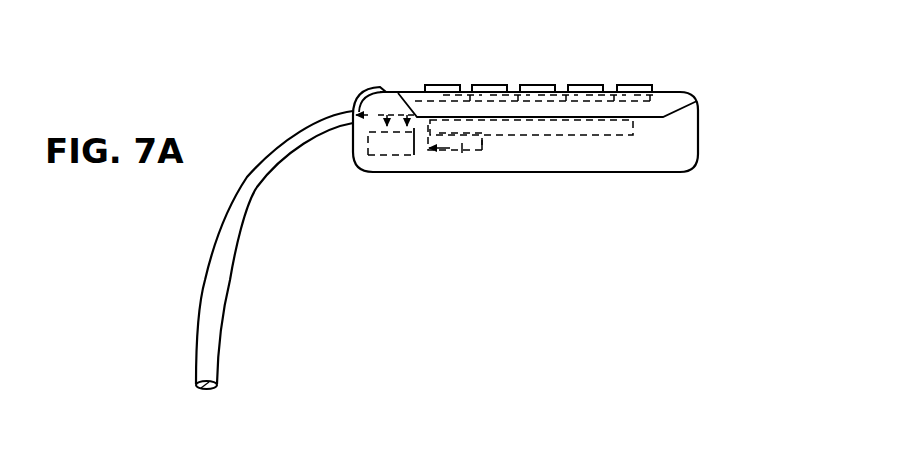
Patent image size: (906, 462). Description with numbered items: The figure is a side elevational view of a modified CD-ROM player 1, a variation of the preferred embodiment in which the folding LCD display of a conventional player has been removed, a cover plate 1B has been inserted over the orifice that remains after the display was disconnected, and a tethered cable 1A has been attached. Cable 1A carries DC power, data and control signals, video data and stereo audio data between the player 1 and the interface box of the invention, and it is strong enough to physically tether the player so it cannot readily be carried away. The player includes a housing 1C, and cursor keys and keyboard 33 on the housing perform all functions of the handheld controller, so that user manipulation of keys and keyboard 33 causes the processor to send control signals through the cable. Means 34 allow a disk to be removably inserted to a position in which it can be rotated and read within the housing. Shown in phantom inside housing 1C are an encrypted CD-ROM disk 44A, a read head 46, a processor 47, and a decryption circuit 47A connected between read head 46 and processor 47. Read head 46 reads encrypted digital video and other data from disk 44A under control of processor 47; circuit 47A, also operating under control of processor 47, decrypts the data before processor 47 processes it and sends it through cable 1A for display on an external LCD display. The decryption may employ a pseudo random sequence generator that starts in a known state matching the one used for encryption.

The CD-ROM player 1 is at (702, 149).
The tethered cable 1A is at (237, 305).
The cover plate 1B is at (350, 93).
The housing 1C is at (653, 172).
The cursor keys and keyboard 33 is at (545, 75).
The means for removably inserting the CD-ROM disk 34 is at (657, 106).
The CD-ROM disk 44A is at (573, 135).
The read head 46 is at (477, 155).
The processor 47 is at (383, 155).
The decryption circuit 47A is at (420, 152).